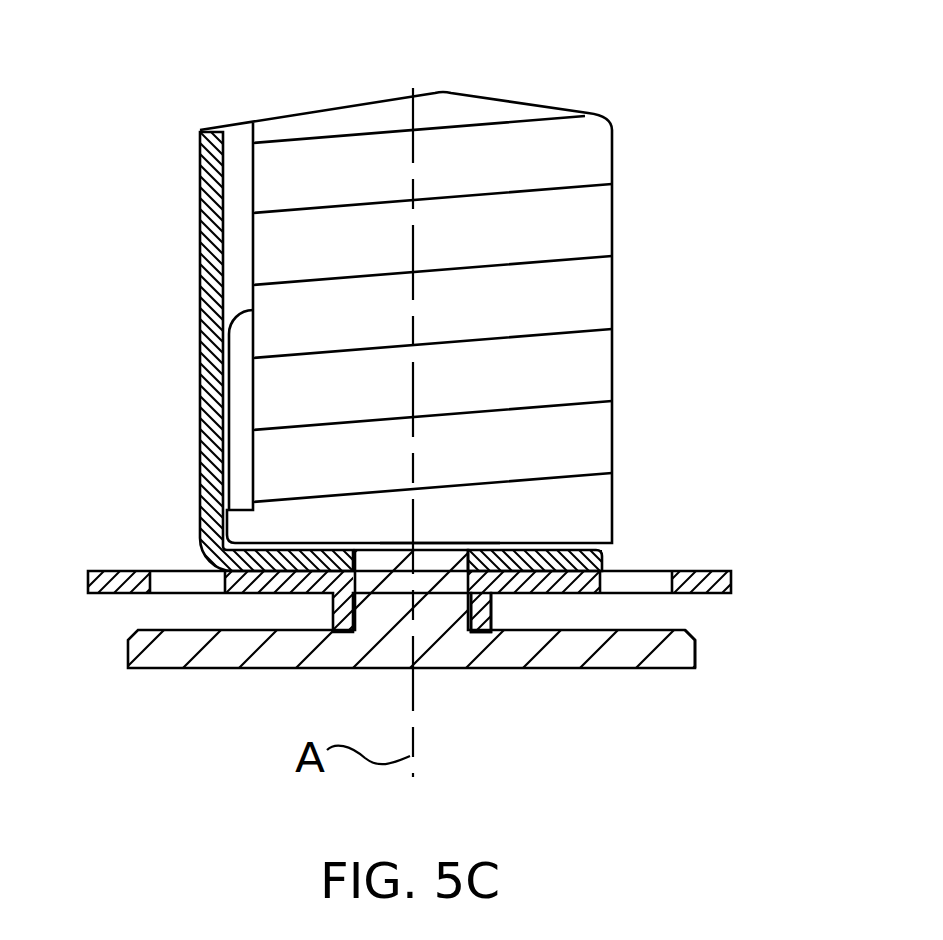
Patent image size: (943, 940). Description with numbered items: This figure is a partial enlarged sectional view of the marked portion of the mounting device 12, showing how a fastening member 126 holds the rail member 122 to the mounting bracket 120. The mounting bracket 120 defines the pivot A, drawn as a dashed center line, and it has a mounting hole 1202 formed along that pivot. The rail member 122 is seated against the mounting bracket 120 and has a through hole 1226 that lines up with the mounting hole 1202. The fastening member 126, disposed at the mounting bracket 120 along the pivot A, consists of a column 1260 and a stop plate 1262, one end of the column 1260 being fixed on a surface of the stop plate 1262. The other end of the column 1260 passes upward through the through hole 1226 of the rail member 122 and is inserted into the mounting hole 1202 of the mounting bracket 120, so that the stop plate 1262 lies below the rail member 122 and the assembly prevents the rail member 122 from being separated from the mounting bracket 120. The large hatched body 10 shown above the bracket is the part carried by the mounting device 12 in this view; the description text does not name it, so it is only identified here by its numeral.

The object 10 is at (612, 236).
The mounting device 12 is at (108, 223).
The mounting bracket 120 is at (200, 392).
The rail member 122 is at (133, 571).
The fastening member 126 is at (603, 668).
The mounting hole 1202 is at (545, 550).
The through hole 1226 is at (492, 600).
The column 1260 is at (443, 545).
The stop plate 1262 is at (695, 648).